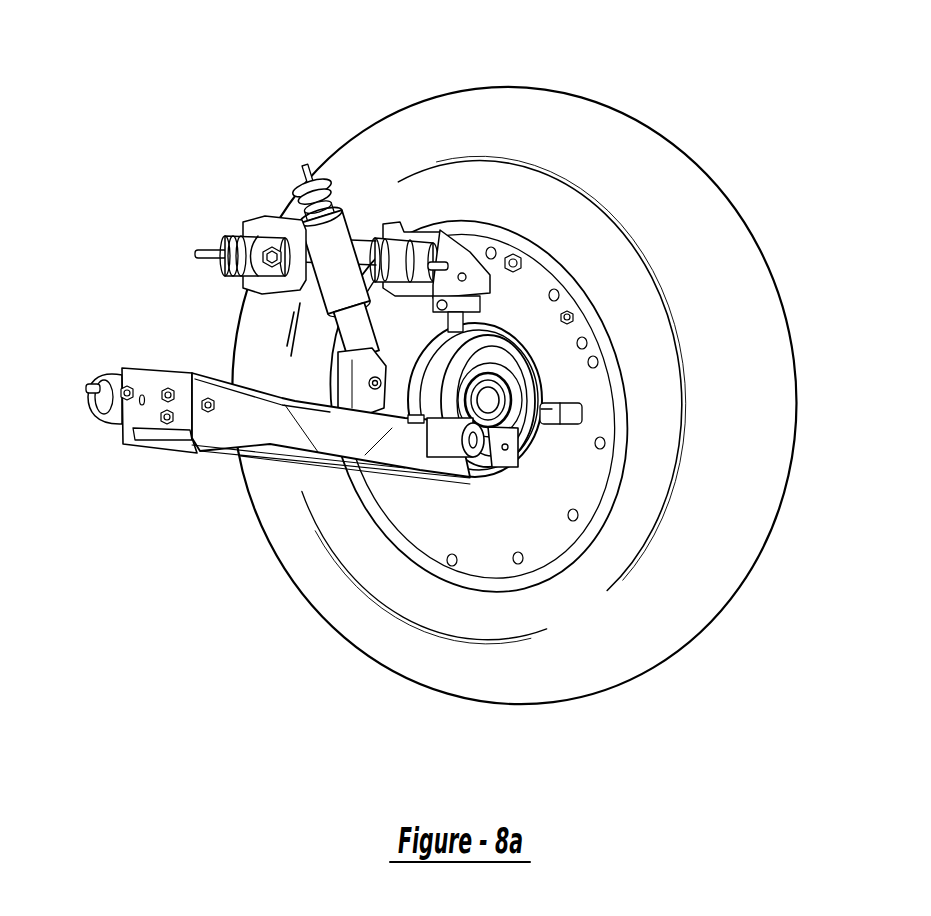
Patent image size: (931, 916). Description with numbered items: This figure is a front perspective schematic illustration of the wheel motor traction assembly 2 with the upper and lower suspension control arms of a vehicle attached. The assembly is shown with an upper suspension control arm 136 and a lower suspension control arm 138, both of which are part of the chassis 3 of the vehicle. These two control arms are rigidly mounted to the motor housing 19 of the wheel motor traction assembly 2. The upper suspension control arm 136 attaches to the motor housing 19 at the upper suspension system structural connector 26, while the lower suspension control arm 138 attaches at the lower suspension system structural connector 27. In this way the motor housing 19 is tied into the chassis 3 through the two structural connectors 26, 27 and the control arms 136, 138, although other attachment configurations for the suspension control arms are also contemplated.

The wheel motor traction assembly 2 is at (675, 102).
The chassis 3 is at (102, 223).
The motor housing 19 is at (543, 347).
The upper suspension system structural connector 26 is at (683, 658).
The lower suspension system structural connector 27 is at (683, 658).
The upper suspension control arm 136 is at (196, 253).
The lower suspension control arm 138 is at (121, 365).